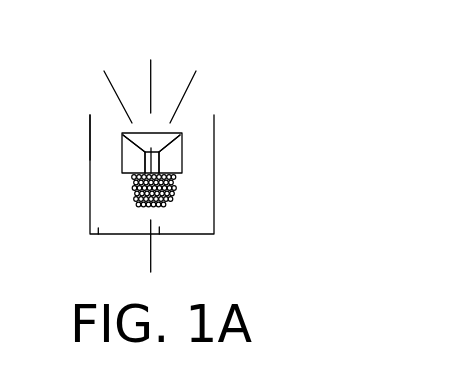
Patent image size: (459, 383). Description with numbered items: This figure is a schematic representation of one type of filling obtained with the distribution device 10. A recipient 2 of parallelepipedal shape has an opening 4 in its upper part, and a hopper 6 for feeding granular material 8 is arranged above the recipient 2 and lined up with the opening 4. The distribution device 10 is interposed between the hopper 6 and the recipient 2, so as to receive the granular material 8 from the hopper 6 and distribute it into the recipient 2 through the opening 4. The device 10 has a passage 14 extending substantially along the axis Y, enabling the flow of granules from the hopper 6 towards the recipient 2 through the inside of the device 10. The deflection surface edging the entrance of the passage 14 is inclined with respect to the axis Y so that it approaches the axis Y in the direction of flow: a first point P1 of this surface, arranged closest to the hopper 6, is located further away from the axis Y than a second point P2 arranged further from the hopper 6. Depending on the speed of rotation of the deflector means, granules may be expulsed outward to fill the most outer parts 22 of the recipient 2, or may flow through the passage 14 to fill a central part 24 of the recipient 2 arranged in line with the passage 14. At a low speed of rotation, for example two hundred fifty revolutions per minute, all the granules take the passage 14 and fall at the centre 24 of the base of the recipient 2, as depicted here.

The recipient 2 is at (214, 207).
The opening 4 is at (97, 118).
The hopper 6 is at (188, 85).
The granular material 8 is at (133, 189).
The distribution device 10 is at (182, 131).
The passage 14 is at (149, 164).
The most outer parts 22 is at (98, 234).
The central part 24 is at (159, 234).
The first point P1 is at (167, 148).
The second point P2 is at (161, 155).
The axis Y is at (151, 66).